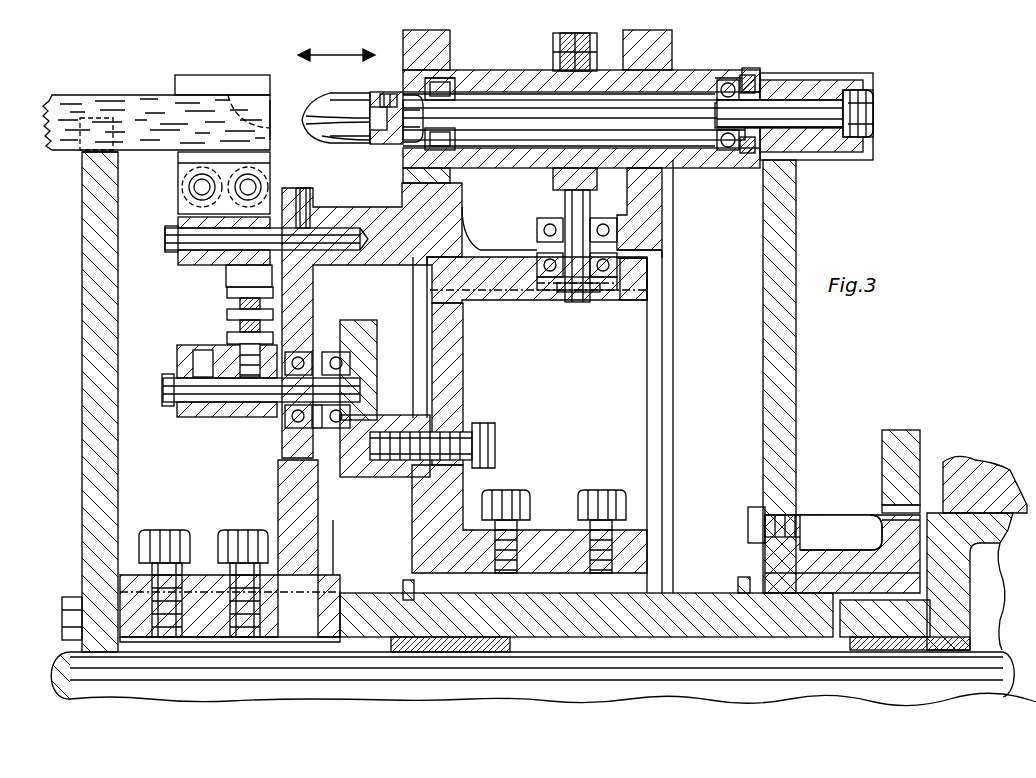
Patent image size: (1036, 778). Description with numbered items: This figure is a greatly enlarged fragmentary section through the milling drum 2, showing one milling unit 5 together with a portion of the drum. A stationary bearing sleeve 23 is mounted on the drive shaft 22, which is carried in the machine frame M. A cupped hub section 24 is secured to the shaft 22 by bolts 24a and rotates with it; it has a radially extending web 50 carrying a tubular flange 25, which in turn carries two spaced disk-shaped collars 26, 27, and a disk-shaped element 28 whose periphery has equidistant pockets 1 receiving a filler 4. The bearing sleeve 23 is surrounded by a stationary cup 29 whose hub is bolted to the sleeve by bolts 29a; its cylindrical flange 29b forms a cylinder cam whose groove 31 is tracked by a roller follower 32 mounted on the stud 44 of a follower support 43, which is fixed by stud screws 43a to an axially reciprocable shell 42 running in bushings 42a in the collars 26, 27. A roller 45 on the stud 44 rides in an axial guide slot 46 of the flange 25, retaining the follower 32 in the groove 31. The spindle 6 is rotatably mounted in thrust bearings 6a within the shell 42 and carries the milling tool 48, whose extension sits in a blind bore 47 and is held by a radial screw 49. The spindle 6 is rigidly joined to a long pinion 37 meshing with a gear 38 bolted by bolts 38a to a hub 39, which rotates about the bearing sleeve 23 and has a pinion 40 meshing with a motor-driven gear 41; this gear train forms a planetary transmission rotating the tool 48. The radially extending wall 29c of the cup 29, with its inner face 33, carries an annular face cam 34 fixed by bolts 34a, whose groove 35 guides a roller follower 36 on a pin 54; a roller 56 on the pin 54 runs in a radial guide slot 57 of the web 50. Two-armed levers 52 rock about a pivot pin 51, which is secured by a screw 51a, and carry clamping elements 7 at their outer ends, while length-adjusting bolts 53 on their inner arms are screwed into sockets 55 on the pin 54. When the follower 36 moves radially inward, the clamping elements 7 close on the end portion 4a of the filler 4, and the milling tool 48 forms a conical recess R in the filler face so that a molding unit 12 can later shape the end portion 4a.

The pocket 1 is at (86, 152).
The milling drum 2 is at (188, 74).
The filler 4 is at (118, 100).
The end portion of the filler 4a is at (206, 97).
The milling unit 5 is at (309, 99).
The spindle 6 is at (508, 102).
The thrust bearings 6a is at (436, 76).
The clamping elements 7 is at (248, 88).
The molding unit 12 is at (535, 60).
The drive shaft 22 is at (918, 690).
The bearing sleeve 23 is at (700, 596).
The hub section 24 is at (346, 598).
The bolts 24a is at (246, 530).
The tubular flange 25 is at (674, 216).
The collar 26 is at (440, 78).
The collar 27 is at (676, 36).
The disk-shaped element 28 is at (82, 460).
The cup 29 is at (662, 368).
The bolts 29a is at (598, 490).
The cylindrical flange 29b is at (628, 302).
The radially extending wall 29c is at (463, 378).
The cam groove 31 is at (605, 290).
The roller follower 32 is at (547, 292).
The inner face 33 is at (428, 292).
The face cam 34 is at (368, 333).
The bolts 34a is at (496, 447).
The cam groove 35 is at (352, 362).
The roller follower 36 is at (357, 368).
The pinion 37 is at (830, 73).
The gear 38 is at (796, 184).
The bolts 38a is at (748, 522).
The hub 39 is at (822, 552).
The pinion 40 is at (884, 513).
The gear 41 is at (882, 456).
The shell 42 is at (758, 50).
The bushings 42a is at (446, 76).
The follower support 43 is at (553, 178).
The stud screws 43a is at (578, 36).
The stud 44 is at (578, 233).
The roller 45 is at (537, 236).
The guide slot 46 is at (457, 240).
The blind bore 47 is at (384, 145).
The milling tool 48 is at (342, 143).
The radial screw 49 is at (388, 94).
The web 50 is at (314, 285).
The pivot pin 51 is at (176, 246).
The screw 51a is at (302, 188).
The two-armed levers 52 is at (198, 265).
The length-adjusting bolts 53 is at (227, 305).
The pin 54 is at (172, 390).
The sockets 55 is at (194, 417).
The roller 56 is at (286, 424).
The guide slot 57 is at (278, 463).
The machine frame M is at (972, 480).
The conical recess R is at (271, 106).